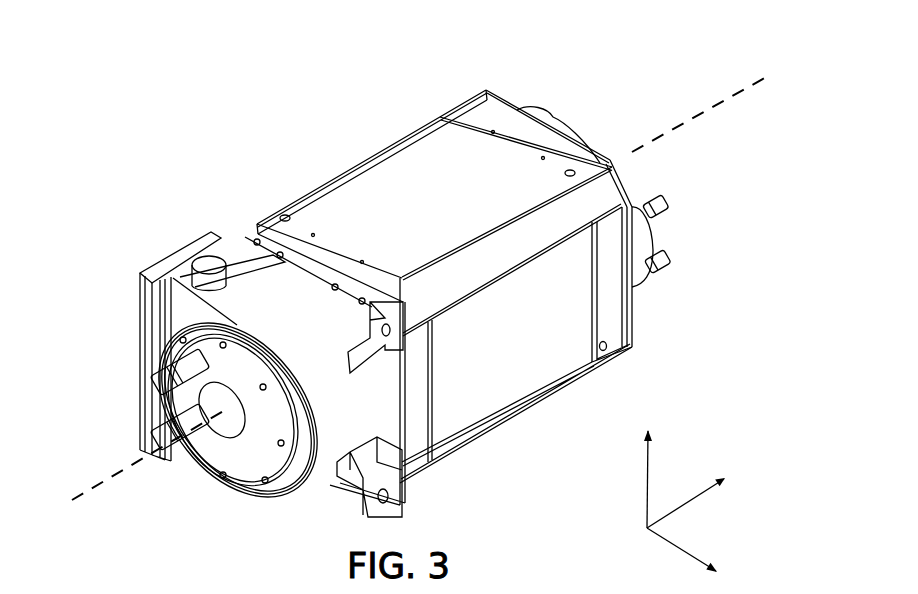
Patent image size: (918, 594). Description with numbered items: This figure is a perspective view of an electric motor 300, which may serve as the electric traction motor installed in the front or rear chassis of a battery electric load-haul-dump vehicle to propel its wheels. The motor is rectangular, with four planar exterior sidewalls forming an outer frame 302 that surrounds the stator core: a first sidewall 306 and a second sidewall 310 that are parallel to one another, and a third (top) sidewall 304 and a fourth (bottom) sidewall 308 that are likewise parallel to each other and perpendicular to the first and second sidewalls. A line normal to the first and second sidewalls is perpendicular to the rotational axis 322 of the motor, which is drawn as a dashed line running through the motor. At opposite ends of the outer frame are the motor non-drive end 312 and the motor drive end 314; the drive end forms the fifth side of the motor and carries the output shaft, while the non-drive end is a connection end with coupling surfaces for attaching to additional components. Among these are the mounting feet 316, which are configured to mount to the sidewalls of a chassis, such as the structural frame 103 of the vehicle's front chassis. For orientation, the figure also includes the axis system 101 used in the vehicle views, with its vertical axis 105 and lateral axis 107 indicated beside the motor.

The electric motor 300 is at (632, 44).
The outer frame 302 is at (325, 133).
The third (top) sidewall 304 is at (440, 153).
The first sidewall 306 is at (553, 340).
The fourth (bottom) sidewall 308 is at (483, 442).
The second sidewall 310 is at (310, 180).
The motor non-drive end 312 is at (172, 232).
The motor drive end 314 is at (621, 147).
The mounting feet 316 is at (405, 330).
The rotational axis 322 is at (122, 470).
The axis system 101 is at (752, 445).
The structural frame 103 is at (682, 505).
The vertical axis 105 is at (647, 487).
The lateral axis 107 is at (662, 537).